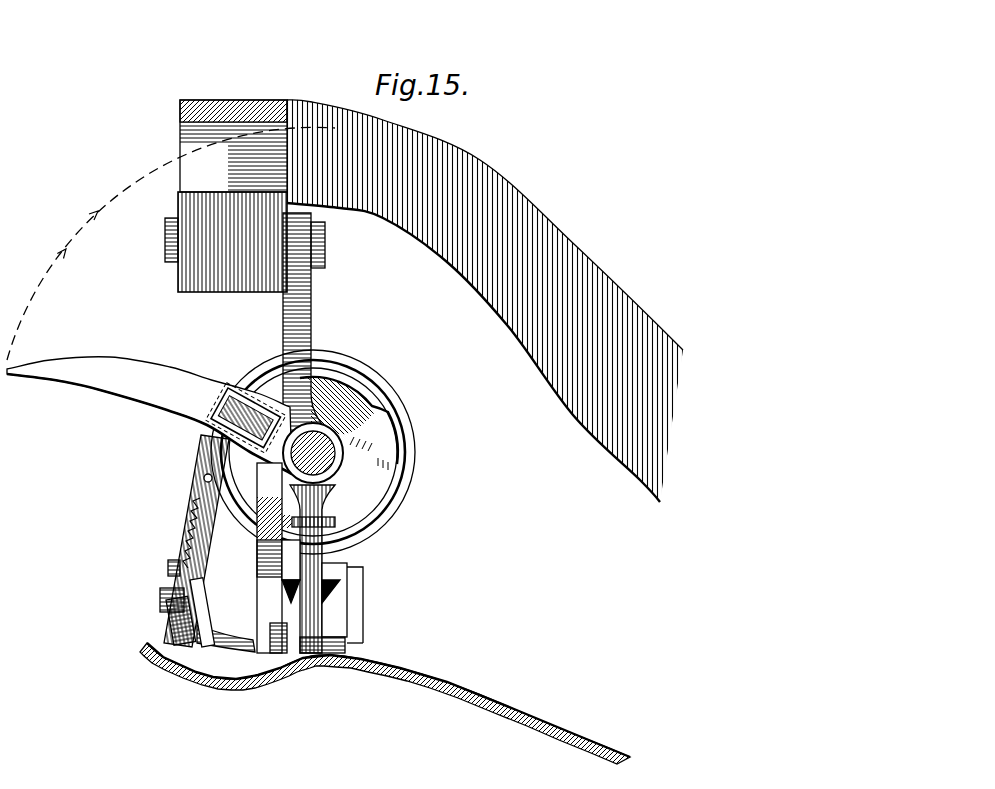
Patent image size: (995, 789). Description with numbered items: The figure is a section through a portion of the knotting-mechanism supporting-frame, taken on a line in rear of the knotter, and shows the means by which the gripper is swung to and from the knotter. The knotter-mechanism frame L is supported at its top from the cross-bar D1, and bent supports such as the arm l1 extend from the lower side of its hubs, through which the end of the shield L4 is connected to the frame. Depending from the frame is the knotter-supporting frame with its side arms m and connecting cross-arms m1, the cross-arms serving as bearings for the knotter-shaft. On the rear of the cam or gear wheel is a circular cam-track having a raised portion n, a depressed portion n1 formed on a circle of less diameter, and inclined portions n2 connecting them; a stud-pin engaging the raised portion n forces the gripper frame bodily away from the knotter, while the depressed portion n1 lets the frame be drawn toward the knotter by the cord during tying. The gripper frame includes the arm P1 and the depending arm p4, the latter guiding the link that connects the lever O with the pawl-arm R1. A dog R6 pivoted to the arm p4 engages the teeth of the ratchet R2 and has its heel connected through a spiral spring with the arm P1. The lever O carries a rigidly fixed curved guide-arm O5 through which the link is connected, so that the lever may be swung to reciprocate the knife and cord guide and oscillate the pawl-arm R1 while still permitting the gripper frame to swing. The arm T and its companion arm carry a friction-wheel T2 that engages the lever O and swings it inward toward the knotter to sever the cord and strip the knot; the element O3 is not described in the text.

The cross-bar D1 is at (212, 247).
The curved guide-arm O5 is at (554, 255).
The knotter-mechanism frame L is at (310, 433).
The friction-wheel T2 is at (241, 388).
The depressed portion of cam-track n1 is at (341, 373).
The inclined portions of cam-track n2 is at (390, 412).
The arm T is at (175, 305).
The raised portion of cam-track n is at (404, 498).
The gripper-frame arm P1 is at (203, 508).
The dog R6 is at (170, 537).
The lever O is at (286, 558).
The pawl and ratchet R2 is at (183, 602).
The depending arm p4 is at (198, 608).
The pawl-arm R1 is at (187, 608).
The side arms m is at (346, 566).
The cross-arms m1 is at (335, 600).
The bent arm or support l1 is at (318, 623).
The base flange O3 is at (369, 644).
The shield L4 is at (385, 703).